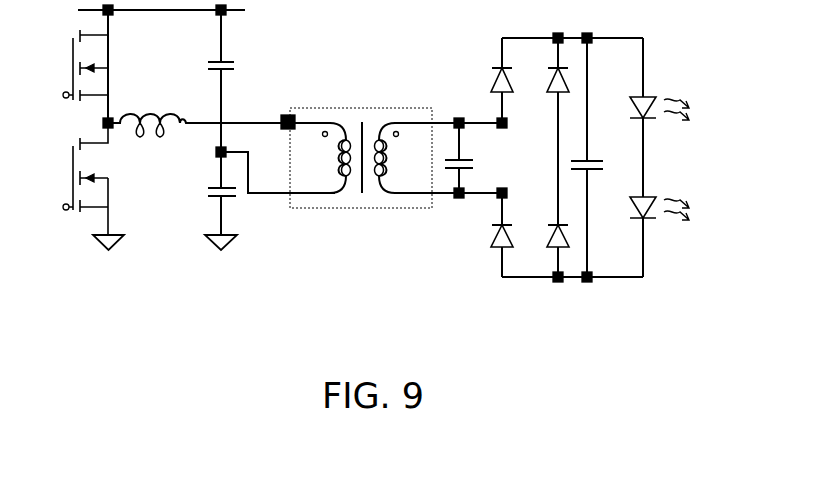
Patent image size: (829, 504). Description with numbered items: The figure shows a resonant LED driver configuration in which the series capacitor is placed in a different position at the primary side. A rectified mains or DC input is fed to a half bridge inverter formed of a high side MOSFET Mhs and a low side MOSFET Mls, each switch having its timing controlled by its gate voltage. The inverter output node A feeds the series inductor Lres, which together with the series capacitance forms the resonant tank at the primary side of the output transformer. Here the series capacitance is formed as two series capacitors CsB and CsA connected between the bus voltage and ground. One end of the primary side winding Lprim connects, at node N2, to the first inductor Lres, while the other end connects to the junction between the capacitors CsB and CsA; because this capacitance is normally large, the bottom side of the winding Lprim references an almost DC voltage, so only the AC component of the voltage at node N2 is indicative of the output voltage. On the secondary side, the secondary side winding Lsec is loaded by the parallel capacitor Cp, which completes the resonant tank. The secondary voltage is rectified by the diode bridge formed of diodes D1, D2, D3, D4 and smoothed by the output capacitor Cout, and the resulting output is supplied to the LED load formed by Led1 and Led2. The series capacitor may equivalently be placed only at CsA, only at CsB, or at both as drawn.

The high side MOSFET Mhs is at (91, 66).
The low side MOSFET Mls is at (93, 186).
The series inductor Lres is at (153, 113).
The node A is at (198, 110).
The series capacitor CsB is at (207, 66).
The series capacitor CsA is at (257, 186).
The node N2 is at (277, 111).
The primary side winding Lprim is at (299, 158).
The secondary side winding Lsec is at (417, 158).
The parallel capacitor Cp is at (465, 158).
The diode D1 is at (487, 80).
The diode D2 is at (544, 131).
The diode D3 is at (487, 235).
The diode D4 is at (544, 251).
The smoothing output capacitor Cout is at (600, 157).
The LED load Led1 is at (661, 117).
The LED load Led2 is at (661, 226).